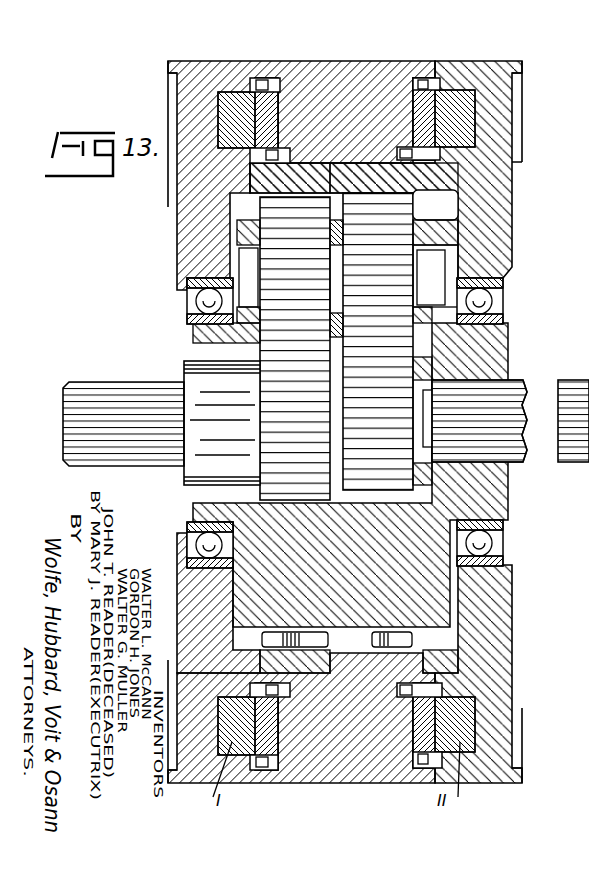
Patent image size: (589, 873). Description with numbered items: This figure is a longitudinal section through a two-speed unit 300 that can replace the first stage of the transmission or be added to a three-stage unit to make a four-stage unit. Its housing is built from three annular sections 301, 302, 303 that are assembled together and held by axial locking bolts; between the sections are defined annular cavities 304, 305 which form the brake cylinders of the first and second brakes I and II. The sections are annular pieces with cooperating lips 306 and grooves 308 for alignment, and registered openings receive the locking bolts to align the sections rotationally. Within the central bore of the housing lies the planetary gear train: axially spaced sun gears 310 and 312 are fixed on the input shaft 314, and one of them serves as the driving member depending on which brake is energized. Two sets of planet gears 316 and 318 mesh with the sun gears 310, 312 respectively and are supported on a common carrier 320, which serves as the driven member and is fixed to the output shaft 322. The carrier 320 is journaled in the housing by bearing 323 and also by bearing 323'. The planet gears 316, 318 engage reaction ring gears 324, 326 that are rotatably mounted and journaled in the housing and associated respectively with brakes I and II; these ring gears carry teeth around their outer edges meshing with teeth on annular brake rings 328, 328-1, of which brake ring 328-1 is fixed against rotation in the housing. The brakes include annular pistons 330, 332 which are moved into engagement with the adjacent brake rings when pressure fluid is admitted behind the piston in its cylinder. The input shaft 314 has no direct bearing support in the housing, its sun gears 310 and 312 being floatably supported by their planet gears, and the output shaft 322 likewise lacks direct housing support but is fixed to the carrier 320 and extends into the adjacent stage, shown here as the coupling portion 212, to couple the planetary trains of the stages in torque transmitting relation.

The two-speed unit 300 is at (394, 57).
The annular housing section 301 is at (195, 767).
The annular housing section 302 is at (356, 783).
The annular housing section 303 is at (492, 777).
The annular cavity 304 is at (250, 94).
The annular cavity 305 is at (466, 122).
The lip 306 is at (229, 110).
The groove 308 is at (279, 137).
The sun gear 310 is at (260, 490).
The sun gear 312 is at (405, 494).
The input shaft 314 is at (134, 392).
The planet gears 316 is at (273, 232).
The planet gears 318 is at (403, 212).
The common carrier 320 is at (437, 233).
The output shaft 322 is at (507, 393).
The bearing 323 is at (511, 422).
The bearing 323' is at (164, 423).
The reaction ring gear 324 is at (273, 178).
The reaction ring gear 326 is at (410, 180).
The annular brake ring 328 is at (280, 762).
The annular brake ring 328-1 is at (265, 768).
The annular piston 330 is at (247, 747).
The annular piston 332 is at (458, 720).
The shaft 212 is at (580, 452).